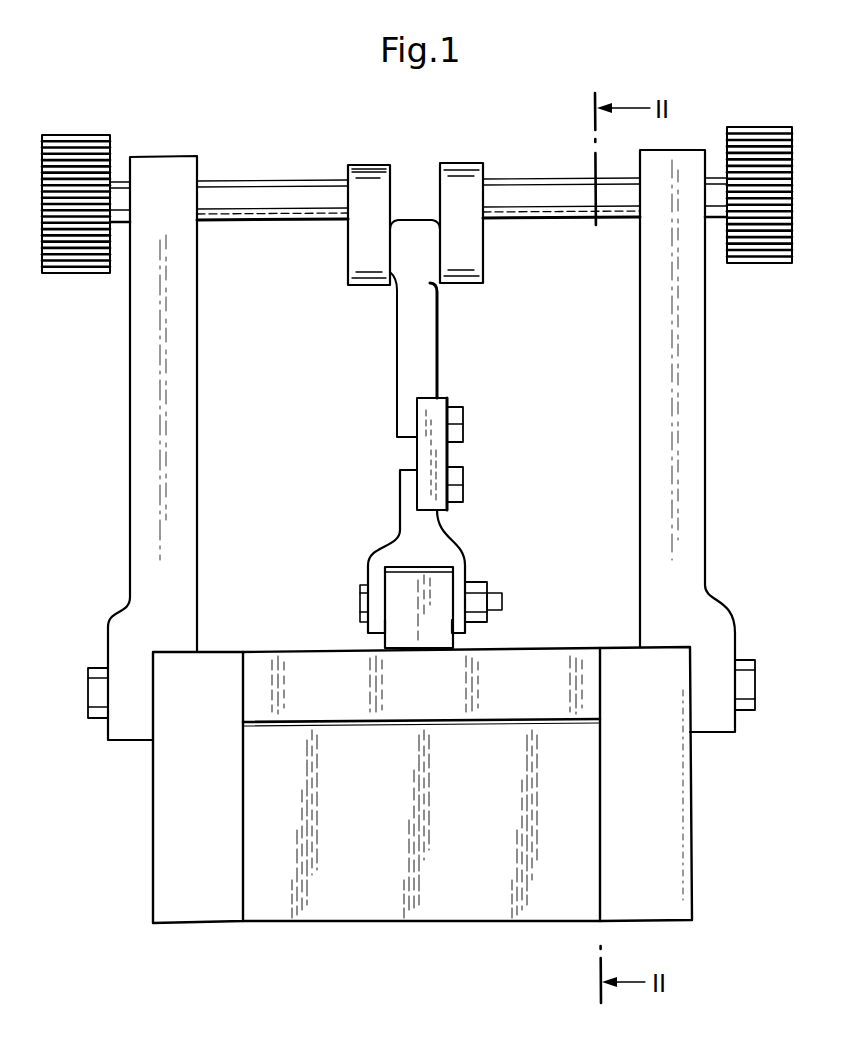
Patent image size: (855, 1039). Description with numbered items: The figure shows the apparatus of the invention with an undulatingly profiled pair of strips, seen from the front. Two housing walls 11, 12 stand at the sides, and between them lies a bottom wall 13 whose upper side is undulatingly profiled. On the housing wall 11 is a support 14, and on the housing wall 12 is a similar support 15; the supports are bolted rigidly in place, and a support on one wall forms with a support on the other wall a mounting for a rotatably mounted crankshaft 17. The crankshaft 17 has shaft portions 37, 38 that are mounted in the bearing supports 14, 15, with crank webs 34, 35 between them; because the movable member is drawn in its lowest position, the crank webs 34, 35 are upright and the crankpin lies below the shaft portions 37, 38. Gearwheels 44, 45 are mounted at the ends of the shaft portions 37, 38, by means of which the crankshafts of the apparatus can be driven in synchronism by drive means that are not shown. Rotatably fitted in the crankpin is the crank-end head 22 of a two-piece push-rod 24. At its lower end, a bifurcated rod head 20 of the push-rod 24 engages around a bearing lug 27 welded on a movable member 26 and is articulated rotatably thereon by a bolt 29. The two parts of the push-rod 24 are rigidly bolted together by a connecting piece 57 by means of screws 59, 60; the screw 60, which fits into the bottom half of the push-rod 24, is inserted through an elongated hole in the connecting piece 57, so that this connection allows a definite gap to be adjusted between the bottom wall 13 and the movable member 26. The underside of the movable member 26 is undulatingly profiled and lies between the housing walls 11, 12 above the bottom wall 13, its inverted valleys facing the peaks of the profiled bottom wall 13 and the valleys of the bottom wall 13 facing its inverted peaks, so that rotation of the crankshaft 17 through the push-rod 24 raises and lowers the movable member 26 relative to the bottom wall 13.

The housing wall 11 is at (168, 800).
The housing wall 12 is at (677, 798).
The bottom wall 13 is at (363, 900).
The support 14 is at (138, 376).
The support 15 is at (705, 388).
The crankshaft 17 is at (361, 165).
The bifurcated rod head 20 is at (381, 540).
The crank-end head 22 is at (408, 266).
The push-rod 24 is at (440, 347).
The movable member 26 is at (540, 650).
The bearing lug 27 is at (445, 577).
The bolt 29 is at (360, 595).
The crank web 34 is at (360, 250).
The crank web 35 is at (470, 240).
The shaft portion 37 is at (259, 192).
The shaft portion 38 is at (523, 188).
The gearwheel 44 is at (80, 143).
The gearwheel 45 is at (745, 140).
The connecting piece 57 is at (450, 456).
The screw 59 is at (465, 412).
The screw 60 is at (468, 490).